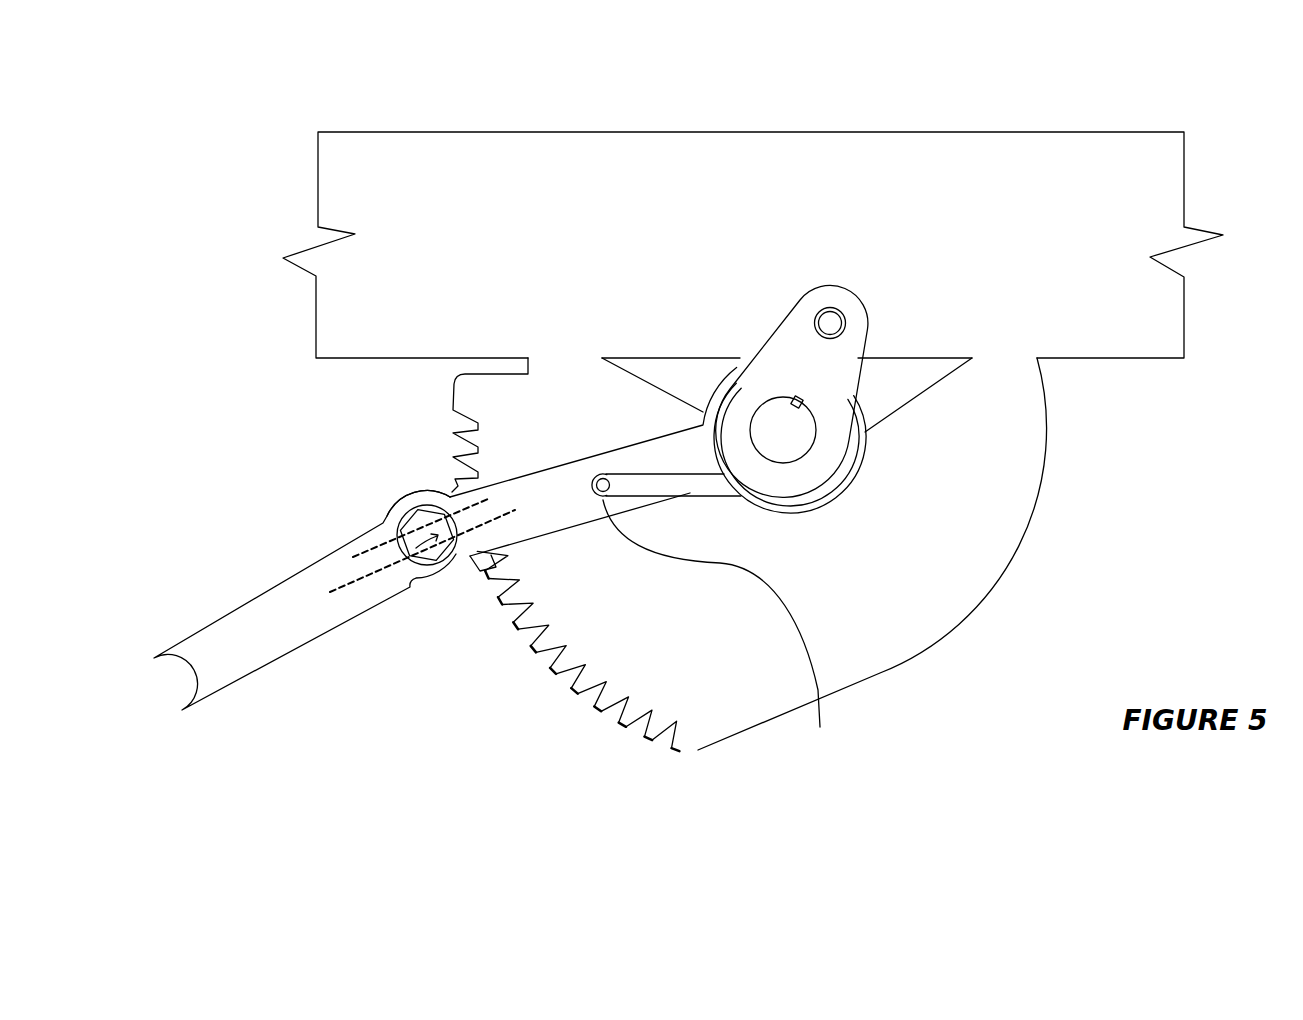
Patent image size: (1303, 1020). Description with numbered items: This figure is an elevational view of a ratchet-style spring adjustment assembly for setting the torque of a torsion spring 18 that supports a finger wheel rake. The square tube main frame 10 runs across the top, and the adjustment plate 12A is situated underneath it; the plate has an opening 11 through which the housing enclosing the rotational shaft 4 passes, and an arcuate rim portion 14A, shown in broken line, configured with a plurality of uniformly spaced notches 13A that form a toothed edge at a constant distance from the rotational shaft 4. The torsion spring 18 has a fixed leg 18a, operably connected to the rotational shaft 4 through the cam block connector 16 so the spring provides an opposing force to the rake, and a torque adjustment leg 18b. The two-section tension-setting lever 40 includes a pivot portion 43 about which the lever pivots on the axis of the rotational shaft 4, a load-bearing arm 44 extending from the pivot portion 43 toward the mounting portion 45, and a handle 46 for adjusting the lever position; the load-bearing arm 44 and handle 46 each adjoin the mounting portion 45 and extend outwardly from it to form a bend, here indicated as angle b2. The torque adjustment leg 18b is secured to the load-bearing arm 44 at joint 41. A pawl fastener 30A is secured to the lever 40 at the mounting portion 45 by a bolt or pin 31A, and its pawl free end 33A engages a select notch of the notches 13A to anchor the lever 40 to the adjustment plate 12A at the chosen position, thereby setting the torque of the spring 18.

The main frame 10 is at (585, 245).
The opening 11 is at (903, 377).
The adjustment plate 12A is at (724, 583).
The notch 13A is at (625, 700).
The arcuate rim portion 14A is at (652, 740).
The cam block connector 16 is at (833, 282).
The torsion spring 18 is at (843, 468).
The fixed leg 18a is at (828, 307).
The torque adjustment leg 18b is at (601, 474).
The rotational shaft 4 is at (775, 445).
The pawl fastener 30A is at (405, 567).
The bolt or pin 31A is at (422, 523).
The pawl free end 33A is at (490, 556).
The tension-setting lever 40 is at (295, 560).
The joint 41 is at (720, 627).
The pivot portion 43 is at (807, 507).
The load-bearing arm 44 is at (522, 516).
The mounting portion 45 is at (427, 492).
The handle 46 is at (216, 668).
The angle b2 is at (430, 540).